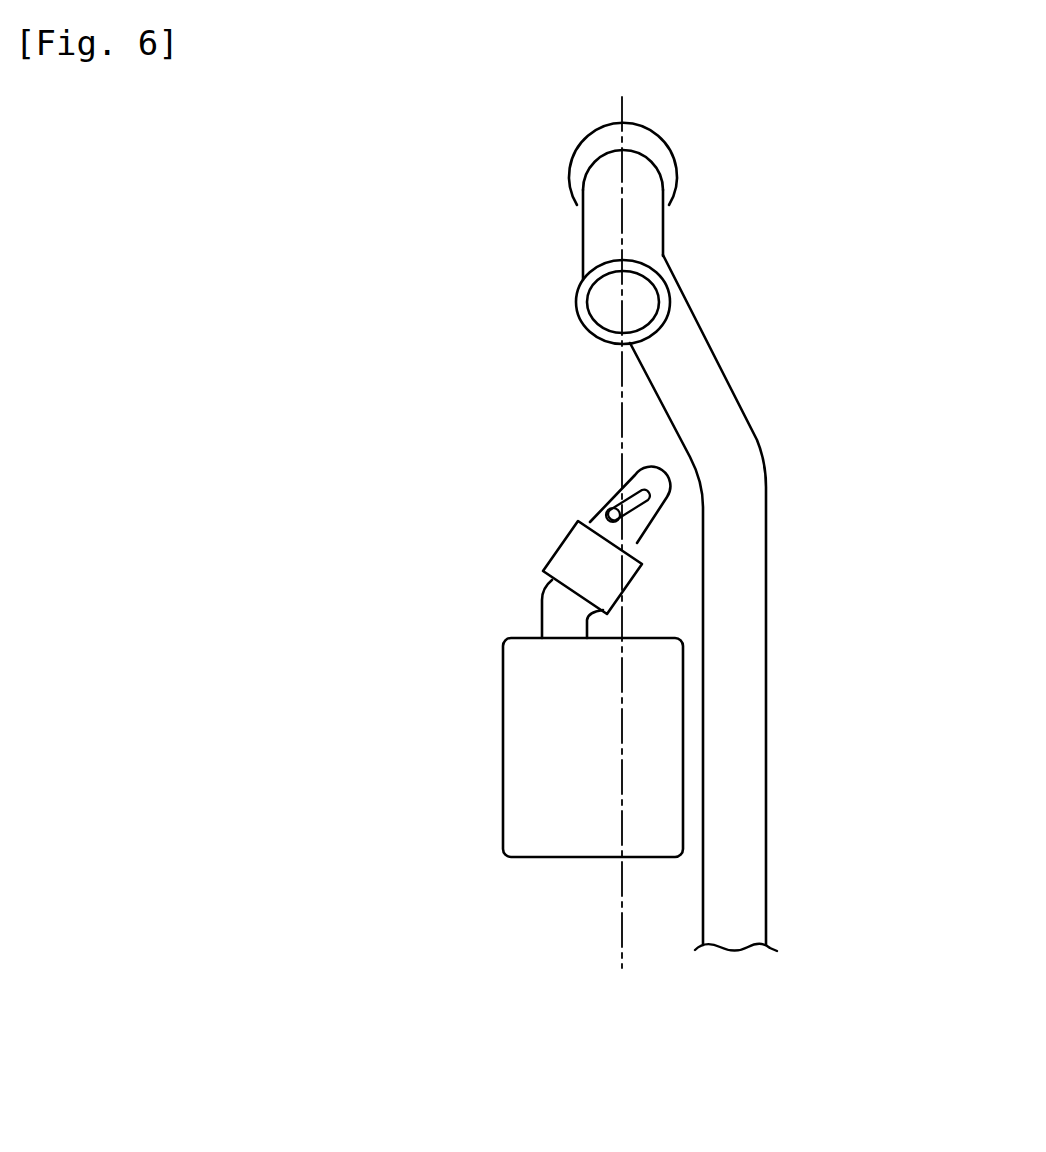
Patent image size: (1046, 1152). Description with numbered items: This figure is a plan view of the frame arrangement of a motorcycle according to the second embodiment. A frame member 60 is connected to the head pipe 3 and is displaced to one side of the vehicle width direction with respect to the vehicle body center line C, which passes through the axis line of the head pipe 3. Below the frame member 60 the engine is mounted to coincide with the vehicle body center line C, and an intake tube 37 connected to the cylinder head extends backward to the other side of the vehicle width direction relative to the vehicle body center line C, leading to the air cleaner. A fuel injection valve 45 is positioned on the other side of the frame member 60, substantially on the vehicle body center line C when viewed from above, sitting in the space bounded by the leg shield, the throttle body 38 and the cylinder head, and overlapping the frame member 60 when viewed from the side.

The head pipe 3 is at (596, 232).
The intake tube 37 is at (541, 604).
The throttle body 38 is at (562, 547).
The fuel injection valve 45 is at (632, 468).
The frame member 60 is at (772, 502).
The vehicle body center line C is at (622, 912).